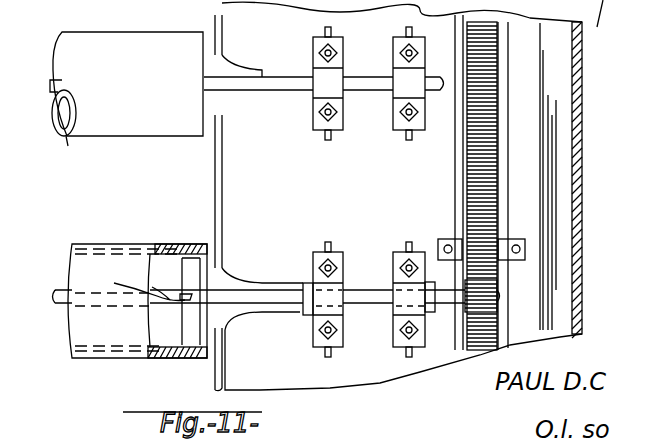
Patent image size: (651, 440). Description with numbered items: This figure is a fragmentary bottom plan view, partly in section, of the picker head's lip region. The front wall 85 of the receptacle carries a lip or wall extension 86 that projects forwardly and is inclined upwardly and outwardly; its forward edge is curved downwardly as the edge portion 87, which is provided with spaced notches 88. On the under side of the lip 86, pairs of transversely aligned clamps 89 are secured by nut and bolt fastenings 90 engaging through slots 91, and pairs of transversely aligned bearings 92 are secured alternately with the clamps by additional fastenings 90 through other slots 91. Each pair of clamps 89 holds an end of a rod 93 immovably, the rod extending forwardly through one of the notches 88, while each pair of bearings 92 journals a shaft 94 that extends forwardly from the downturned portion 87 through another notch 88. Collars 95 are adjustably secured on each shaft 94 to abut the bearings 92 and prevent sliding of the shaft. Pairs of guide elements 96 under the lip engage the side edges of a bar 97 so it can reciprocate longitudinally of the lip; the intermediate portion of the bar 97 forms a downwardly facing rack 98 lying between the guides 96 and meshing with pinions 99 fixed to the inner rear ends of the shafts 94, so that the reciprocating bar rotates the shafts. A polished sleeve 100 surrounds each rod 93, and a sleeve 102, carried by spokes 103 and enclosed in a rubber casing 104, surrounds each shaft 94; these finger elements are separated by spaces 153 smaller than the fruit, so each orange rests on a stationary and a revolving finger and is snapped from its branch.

The front wall 85 is at (582, 196).
The lip or wall extension 86 is at (387, 388).
The downwardly curved edge portion 87 is at (222, 176).
The notches 88 is at (252, 68).
The clamps 89 is at (386, 46).
The nut and bolt fastenings 90 is at (400, 60).
The slots 91 is at (330, 137).
The bearings 92 is at (400, 340).
The rod 93 is at (295, 86).
The shaft 94 is at (288, 300).
The collars 95 is at (310, 283).
The guide elements 96 is at (518, 239).
The bar 97 is at (458, 122).
The rack 98 is at (485, 152).
The pinions 99 is at (497, 290).
The sleeve 100 is at (63, 139).
The sleeve 102 is at (160, 350).
The spokes 103 is at (183, 273).
The casing 104 is at (174, 244).
The spaces 153 is at (118, 211).